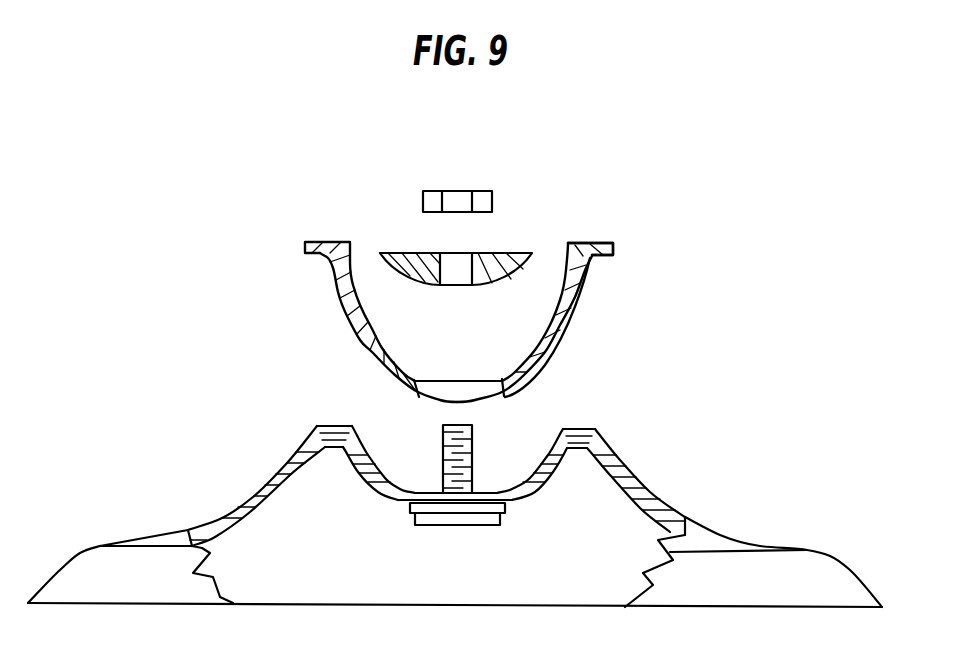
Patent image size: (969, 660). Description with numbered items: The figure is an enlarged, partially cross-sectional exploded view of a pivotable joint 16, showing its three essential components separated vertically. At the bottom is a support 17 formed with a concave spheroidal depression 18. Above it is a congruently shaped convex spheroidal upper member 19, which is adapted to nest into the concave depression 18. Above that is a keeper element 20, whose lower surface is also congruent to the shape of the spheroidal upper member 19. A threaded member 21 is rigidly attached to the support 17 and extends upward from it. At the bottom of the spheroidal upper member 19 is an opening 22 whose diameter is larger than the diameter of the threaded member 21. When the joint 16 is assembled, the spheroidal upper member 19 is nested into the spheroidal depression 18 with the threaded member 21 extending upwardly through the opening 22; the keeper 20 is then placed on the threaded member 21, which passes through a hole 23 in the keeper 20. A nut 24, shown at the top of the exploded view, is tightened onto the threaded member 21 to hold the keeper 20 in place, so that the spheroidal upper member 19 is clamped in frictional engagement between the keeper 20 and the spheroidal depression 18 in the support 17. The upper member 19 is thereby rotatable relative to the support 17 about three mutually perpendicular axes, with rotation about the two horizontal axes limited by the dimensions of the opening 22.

The joint 16 is at (577, 383).
The support 17 is at (617, 452).
The concave spheroidal depression 18 is at (382, 468).
The spheroidal upper member 19 is at (593, 262).
The keeper element 20 is at (495, 253).
The threaded member 21 is at (472, 457).
The opening 22 is at (453, 366).
The hole 23 is at (455, 295).
The nut 24 is at (481, 191).